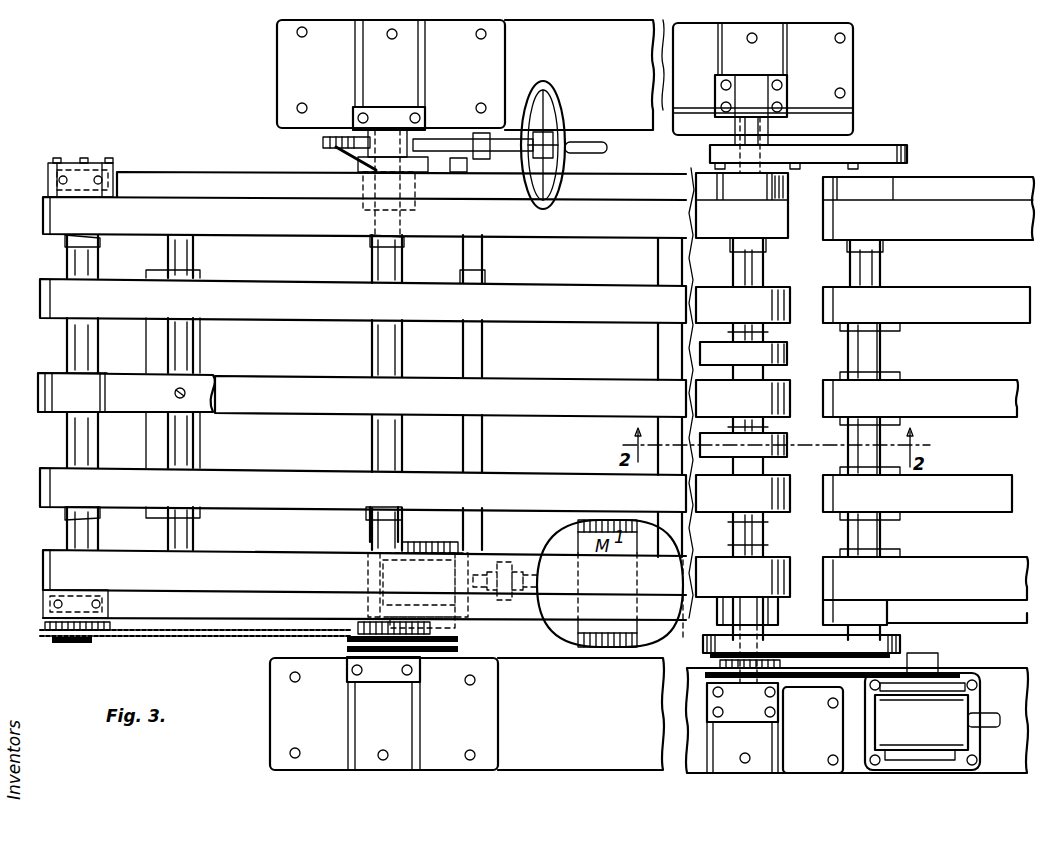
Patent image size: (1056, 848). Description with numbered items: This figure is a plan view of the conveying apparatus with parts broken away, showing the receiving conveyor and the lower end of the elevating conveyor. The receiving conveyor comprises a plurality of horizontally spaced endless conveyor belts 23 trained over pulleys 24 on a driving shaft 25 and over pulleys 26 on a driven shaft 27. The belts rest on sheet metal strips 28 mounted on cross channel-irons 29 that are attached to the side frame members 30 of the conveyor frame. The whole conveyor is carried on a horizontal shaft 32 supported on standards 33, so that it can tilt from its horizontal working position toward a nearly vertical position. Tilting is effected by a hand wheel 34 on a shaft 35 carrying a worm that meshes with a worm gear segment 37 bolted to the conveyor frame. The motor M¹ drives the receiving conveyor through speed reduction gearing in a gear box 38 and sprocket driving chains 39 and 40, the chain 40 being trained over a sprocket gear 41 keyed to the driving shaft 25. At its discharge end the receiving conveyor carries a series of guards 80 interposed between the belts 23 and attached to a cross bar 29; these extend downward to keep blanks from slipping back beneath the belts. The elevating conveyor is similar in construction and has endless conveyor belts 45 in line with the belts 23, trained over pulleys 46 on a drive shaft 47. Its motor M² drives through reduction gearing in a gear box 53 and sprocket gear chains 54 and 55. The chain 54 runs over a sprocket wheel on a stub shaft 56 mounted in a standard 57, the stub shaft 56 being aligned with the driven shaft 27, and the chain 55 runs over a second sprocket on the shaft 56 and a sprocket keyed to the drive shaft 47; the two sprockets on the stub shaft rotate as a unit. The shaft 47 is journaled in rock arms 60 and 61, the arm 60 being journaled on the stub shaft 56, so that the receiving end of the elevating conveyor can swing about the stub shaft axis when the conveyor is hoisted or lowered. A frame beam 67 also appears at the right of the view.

The endless conveyor belts 23 is at (282, 308).
The pulleys 24 is at (60, 318).
The driving shaft 25 is at (80, 433).
The pulleys 26 is at (723, 285).
The driven shaft 27 is at (753, 267).
The sheet metal strips 28 is at (127, 382).
The cross channel-irons 29 is at (177, 434).
The side frame members 30 is at (254, 178).
The horizontal shaft 32 is at (382, 356).
The standards 33 is at (350, 715).
The hand wheel 34 is at (556, 106).
The shaft 35 is at (512, 144).
The worm gear segment 37 is at (323, 144).
The gear box 38 is at (440, 523).
The sprocket driving chain 39 is at (458, 648).
The sprocket driving chain 40 is at (227, 640).
The sprocket gear 41 is at (63, 641).
The endless conveyor belts 45 is at (952, 395).
The pulleys 46 is at (893, 377).
The drive shaft 47 is at (868, 271).
The gear box 53 is at (928, 732).
The sprocket gear chain 54 is at (823, 683).
The sprocket gear chain 55 is at (705, 658).
The stub shaft 56 is at (748, 167).
The standard 57 is at (748, 713).
The rock arm 60 is at (793, 640).
The rock arm 61 is at (818, 155).
The frame beam 67 is at (995, 188).
The guards 80 is at (778, 352).